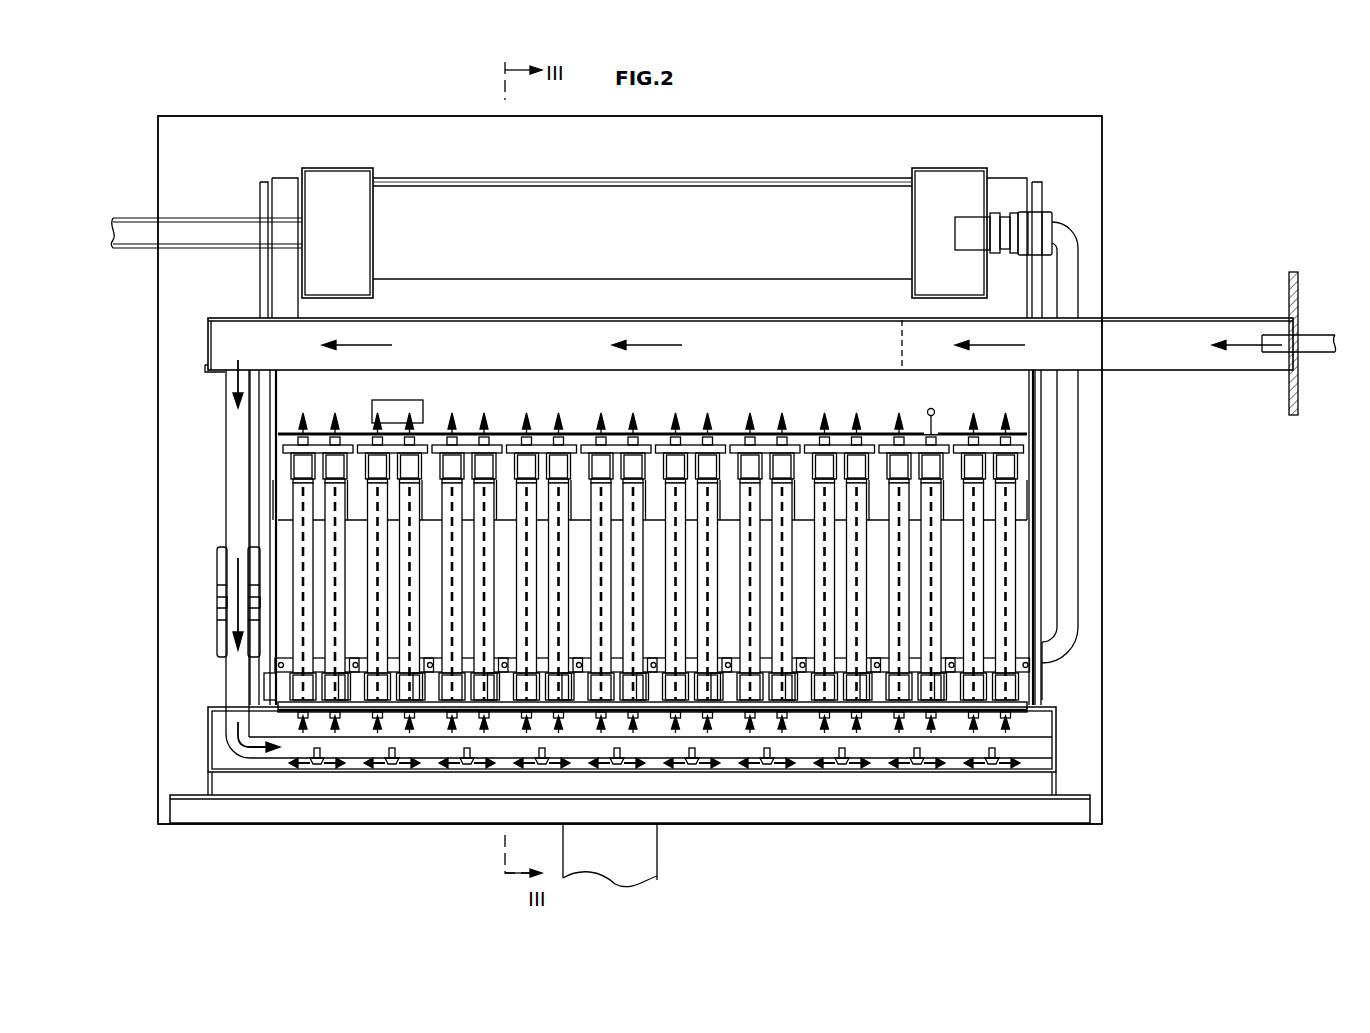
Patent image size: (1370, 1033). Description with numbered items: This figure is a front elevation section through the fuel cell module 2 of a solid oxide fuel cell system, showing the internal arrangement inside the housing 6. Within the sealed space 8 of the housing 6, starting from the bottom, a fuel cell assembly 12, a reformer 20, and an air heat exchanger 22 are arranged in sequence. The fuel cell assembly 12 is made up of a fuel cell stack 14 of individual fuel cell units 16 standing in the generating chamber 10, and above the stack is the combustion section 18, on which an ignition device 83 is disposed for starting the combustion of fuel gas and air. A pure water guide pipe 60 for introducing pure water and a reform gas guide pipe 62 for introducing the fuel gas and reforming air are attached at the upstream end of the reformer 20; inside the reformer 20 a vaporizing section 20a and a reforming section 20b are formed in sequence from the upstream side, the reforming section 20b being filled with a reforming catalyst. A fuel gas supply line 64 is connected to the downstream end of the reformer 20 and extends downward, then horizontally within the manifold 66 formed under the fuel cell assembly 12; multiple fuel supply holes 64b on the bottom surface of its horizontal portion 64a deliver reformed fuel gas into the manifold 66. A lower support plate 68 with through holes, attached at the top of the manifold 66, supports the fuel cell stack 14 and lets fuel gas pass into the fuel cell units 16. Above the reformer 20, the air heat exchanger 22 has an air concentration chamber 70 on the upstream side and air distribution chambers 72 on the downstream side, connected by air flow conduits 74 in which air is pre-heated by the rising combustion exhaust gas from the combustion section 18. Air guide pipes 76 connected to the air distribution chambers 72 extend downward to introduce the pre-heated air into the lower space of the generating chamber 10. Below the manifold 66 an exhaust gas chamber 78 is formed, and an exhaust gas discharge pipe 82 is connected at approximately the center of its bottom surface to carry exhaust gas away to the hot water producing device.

The fuel cell module 2 is at (1176, 236).
The housing 6 is at (1102, 541).
The sealed space 8 is at (999, 407).
The generating chamber 10 is at (727, 612).
The fuel cell assembly 12 is at (760, 642).
The fuel cell stack 14 is at (760, 642).
The fuel cell units 16 is at (760, 642).
The combustion section 18 is at (760, 629).
The reformer 20 is at (749, 376).
The vaporizing section 20a is at (1135, 357).
The reforming section 20b is at (790, 357).
The air heat exchanger 22 is at (642, 177).
The air flow conduits 74 is at (795, 178).
The pure water guide pipe 60 is at (1301, 319).
The reform gas guide pipe 62 is at (1310, 335).
The fuel gas supply line 64 is at (226, 503).
The horizontal portion 64a is at (355, 758).
The fuel supply holes 64b is at (300, 758).
The manifold 66 is at (1056, 768).
The lower support plate 68 is at (1020, 704).
The air concentration chamber 70 is at (340, 168).
The air distribution chambers 72 is at (955, 168).
The air guide pipes 76 is at (1073, 485).
The exhaust gas chamber 78 is at (1000, 813).
The exhaust gas discharge pipe 82 is at (657, 862).
The ignition device 83 is at (423, 412).